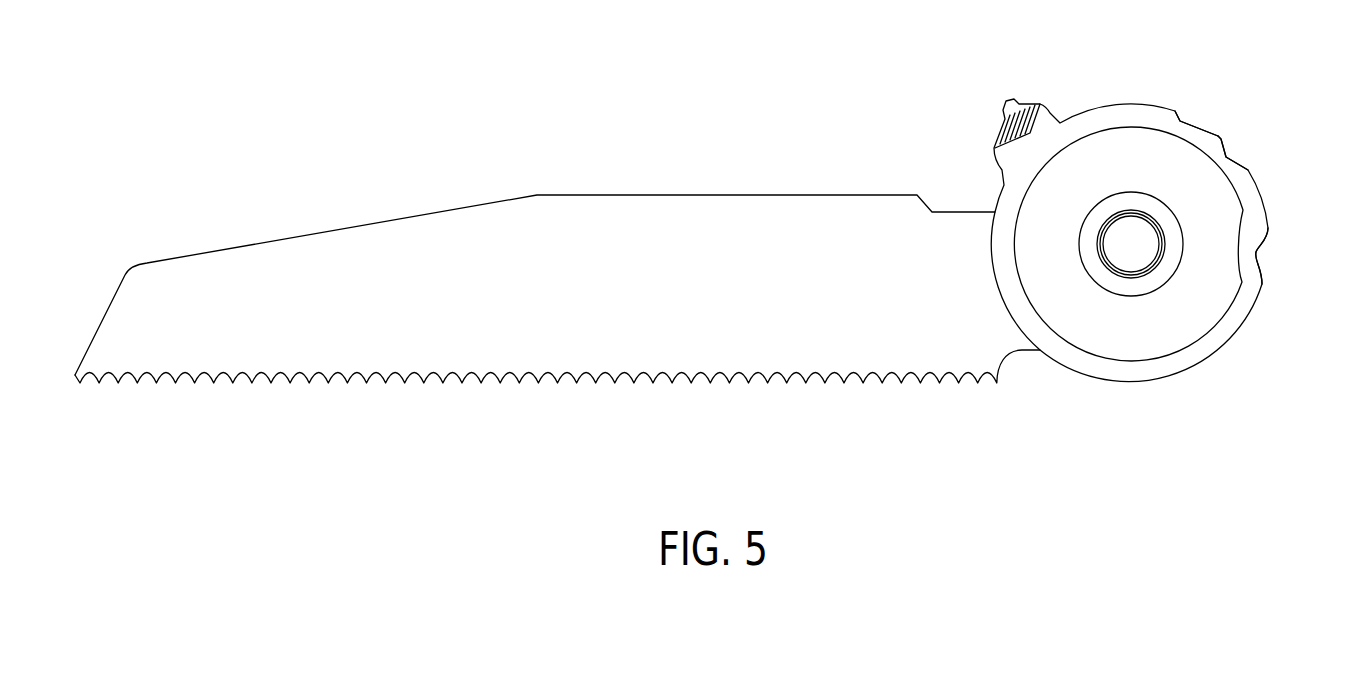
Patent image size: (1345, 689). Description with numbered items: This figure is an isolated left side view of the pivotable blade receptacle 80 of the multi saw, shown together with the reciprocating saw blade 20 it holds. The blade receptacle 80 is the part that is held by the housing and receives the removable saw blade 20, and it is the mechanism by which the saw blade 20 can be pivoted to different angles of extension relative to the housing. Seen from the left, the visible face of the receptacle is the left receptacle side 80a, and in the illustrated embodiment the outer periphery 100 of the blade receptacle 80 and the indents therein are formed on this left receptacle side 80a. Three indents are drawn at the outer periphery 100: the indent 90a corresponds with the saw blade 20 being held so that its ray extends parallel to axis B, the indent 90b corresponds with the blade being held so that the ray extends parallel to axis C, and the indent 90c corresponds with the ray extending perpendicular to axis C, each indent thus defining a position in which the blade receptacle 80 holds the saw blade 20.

The reciprocating saw blade 20 is at (672, 213).
The blade receptacle 80 is at (1130, 125).
The left receptacle side 80a is at (1087, 152).
The indent 90a is at (1228, 157).
The indent 90b is at (1190, 128).
The indent 90c is at (1258, 252).
The outer periphery 100 is at (1246, 351).